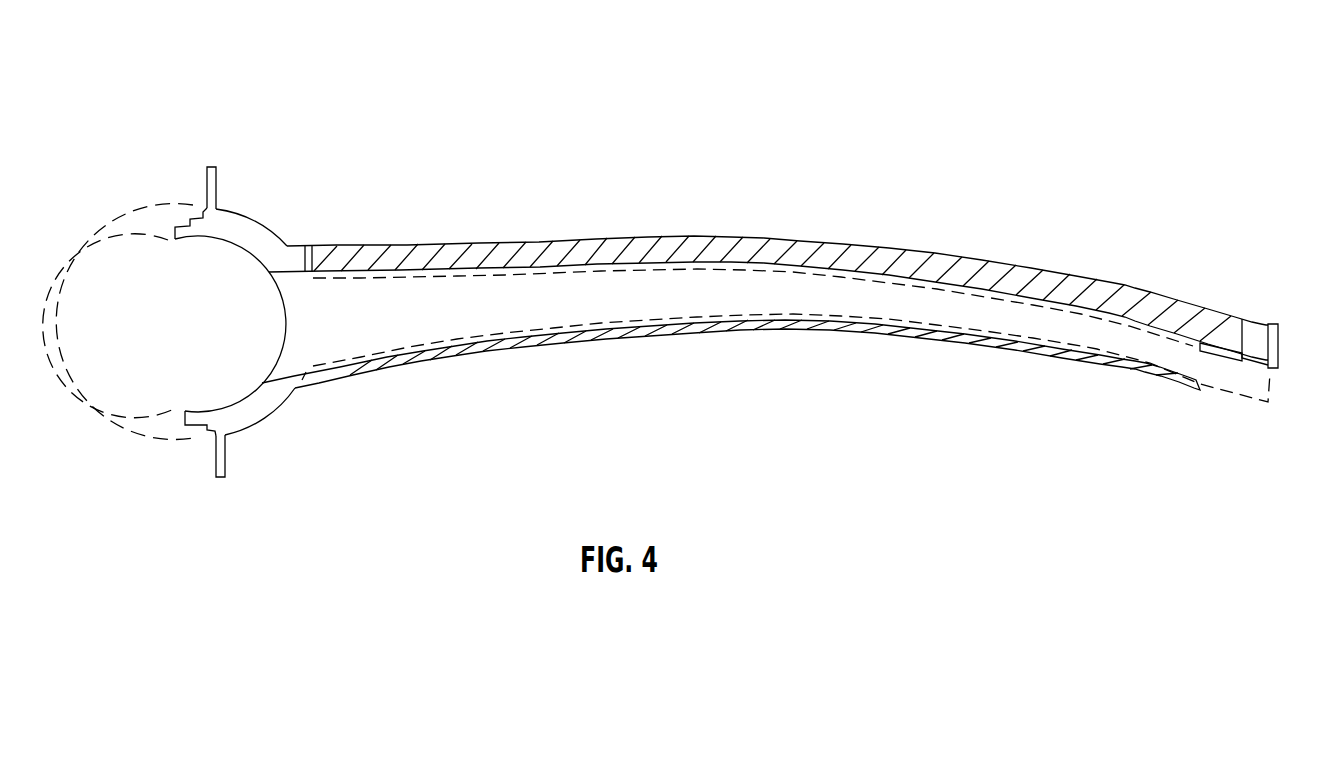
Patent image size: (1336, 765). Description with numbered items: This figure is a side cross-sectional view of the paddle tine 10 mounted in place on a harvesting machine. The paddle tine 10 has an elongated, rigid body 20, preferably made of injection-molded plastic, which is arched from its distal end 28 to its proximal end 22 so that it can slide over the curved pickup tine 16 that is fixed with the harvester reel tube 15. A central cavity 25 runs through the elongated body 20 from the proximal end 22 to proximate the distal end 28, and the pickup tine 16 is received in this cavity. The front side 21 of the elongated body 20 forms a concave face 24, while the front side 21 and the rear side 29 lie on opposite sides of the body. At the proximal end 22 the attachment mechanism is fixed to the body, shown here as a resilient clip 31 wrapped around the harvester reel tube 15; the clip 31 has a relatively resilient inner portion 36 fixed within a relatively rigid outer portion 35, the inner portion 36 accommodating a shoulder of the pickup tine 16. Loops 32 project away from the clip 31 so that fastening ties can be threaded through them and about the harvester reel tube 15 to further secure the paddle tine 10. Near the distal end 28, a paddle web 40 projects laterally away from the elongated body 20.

The paddle tine 10 is at (184, 76).
The harvester reel tube 15 is at (188, 283).
The pickup tine 16 is at (643, 297).
The elongated body 20 is at (418, 260).
The front side 21 is at (592, 335).
The proximal end 22 is at (318, 246).
The concave face 24 is at (763, 323).
The central cavity 25 is at (368, 325).
The distal end 28 is at (1207, 317).
The rear side 29 is at (507, 238).
The resilient clip 31 is at (255, 418).
The loop 32 is at (212, 166).
The rigid outer portion 35 is at (223, 208).
The resilient inner portion 36 is at (197, 210).
The paddle web 40 is at (1276, 340).